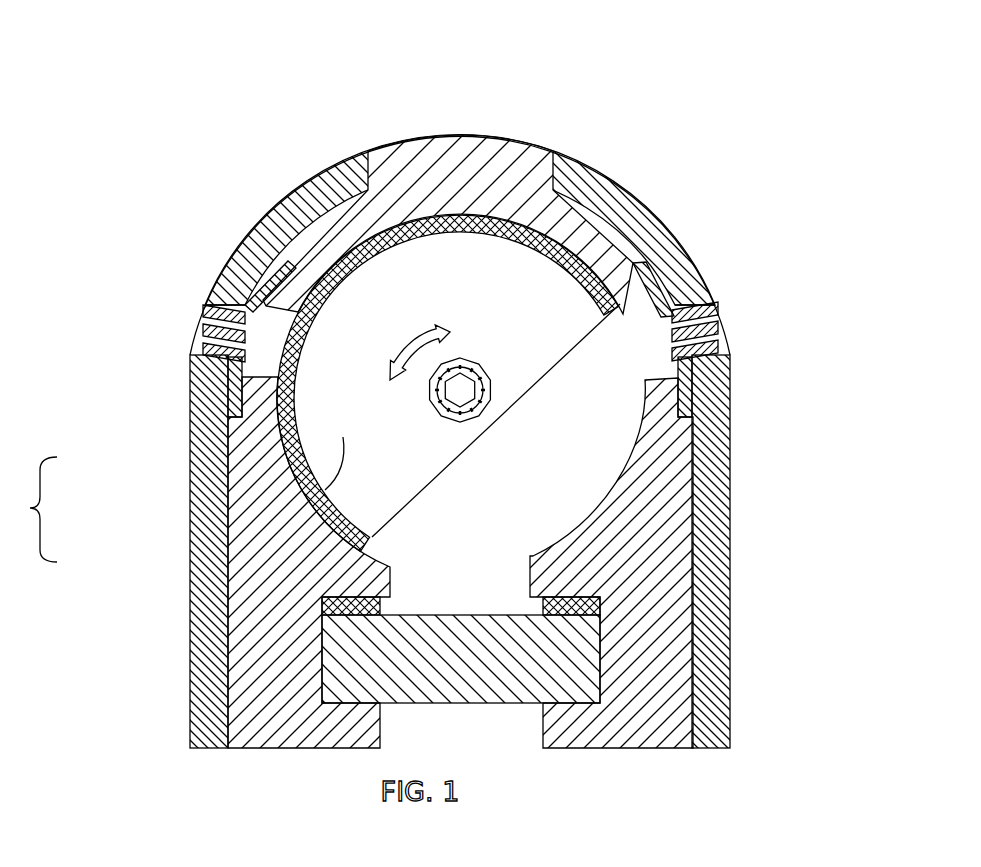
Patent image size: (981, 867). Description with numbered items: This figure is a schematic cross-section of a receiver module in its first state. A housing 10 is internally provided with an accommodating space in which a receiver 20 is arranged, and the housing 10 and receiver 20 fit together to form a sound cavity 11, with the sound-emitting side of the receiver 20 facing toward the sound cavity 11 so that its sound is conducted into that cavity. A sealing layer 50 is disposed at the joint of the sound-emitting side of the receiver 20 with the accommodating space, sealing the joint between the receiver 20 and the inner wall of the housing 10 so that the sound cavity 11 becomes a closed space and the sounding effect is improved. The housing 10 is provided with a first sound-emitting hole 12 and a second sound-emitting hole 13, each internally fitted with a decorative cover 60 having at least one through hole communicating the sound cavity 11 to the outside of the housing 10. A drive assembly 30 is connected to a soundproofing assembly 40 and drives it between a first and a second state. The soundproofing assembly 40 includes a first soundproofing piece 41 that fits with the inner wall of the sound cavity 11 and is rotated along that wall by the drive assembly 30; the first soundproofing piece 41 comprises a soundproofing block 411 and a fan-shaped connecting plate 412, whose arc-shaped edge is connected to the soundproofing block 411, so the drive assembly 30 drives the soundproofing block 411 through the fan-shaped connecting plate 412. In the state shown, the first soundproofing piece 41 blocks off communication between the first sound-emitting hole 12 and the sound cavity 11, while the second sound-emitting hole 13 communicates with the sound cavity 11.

The housing 10 is at (494, 152).
The sound cavity 11 is at (586, 445).
The first sound-emitting hole 12 is at (265, 338).
The second sound-emitting hole 13 is at (657, 330).
The receiver 20 is at (355, 650).
The drive assembly 30 is at (455, 368).
The soundproofing assembly 40 is at (480, 248).
The first soundproofing piece 41 is at (30, 509).
The soundproofing block 411 is at (343, 437).
The fan-shaped connecting plate 412 is at (343, 492).
The sealing layer 50 is at (357, 614).
The decorative cover 60 is at (700, 309).